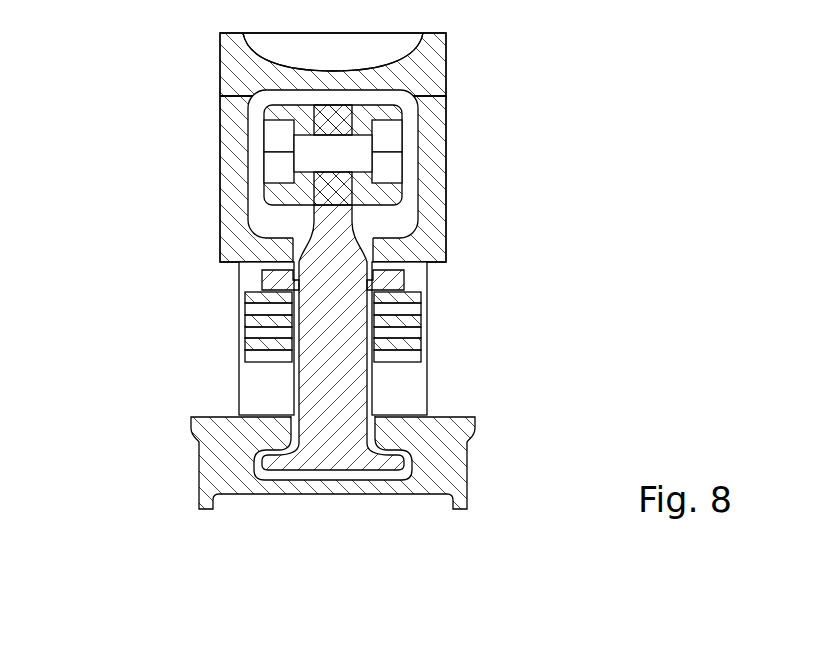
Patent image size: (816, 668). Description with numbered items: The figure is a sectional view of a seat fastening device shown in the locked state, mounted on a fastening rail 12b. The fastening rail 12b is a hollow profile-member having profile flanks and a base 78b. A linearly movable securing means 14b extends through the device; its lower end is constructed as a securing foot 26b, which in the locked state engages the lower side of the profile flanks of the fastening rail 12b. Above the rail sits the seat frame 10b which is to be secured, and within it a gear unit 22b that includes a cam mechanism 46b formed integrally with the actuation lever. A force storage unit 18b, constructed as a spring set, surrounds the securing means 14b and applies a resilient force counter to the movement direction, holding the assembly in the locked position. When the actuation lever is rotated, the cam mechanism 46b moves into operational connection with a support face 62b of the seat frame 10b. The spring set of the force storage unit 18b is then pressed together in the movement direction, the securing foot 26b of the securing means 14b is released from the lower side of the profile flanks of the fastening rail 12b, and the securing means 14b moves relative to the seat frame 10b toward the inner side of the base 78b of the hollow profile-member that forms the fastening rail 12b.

The seat frame 10b is at (243, 55).
The support face 62b is at (288, 99).
The cam mechanism 46b is at (403, 108).
The gear unit 22b is at (217, 157).
The force storage unit 18b is at (239, 327).
The securing means 14b is at (332, 356).
The fastening rail 12b is at (432, 442).
The securing foot 26b is at (325, 463).
The base 78b is at (290, 455).